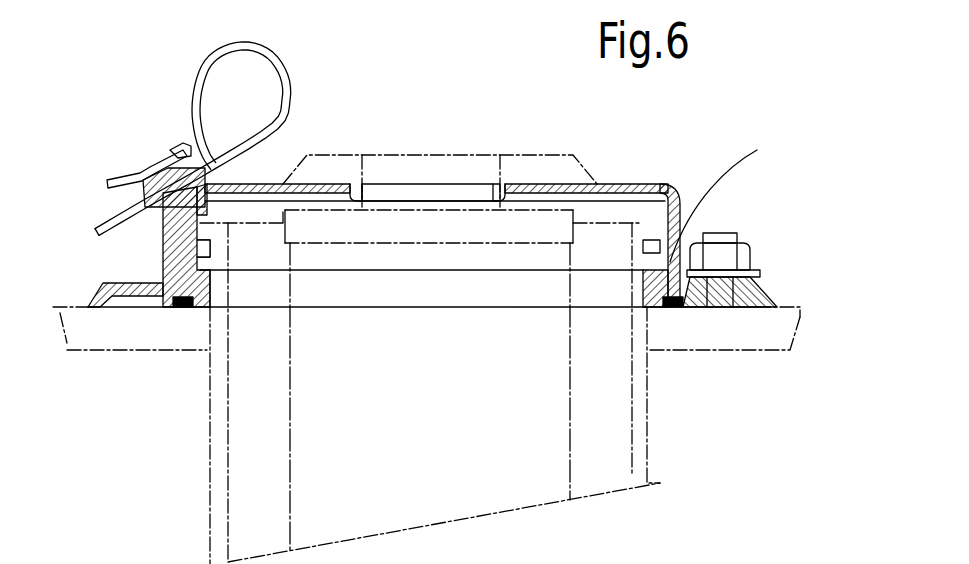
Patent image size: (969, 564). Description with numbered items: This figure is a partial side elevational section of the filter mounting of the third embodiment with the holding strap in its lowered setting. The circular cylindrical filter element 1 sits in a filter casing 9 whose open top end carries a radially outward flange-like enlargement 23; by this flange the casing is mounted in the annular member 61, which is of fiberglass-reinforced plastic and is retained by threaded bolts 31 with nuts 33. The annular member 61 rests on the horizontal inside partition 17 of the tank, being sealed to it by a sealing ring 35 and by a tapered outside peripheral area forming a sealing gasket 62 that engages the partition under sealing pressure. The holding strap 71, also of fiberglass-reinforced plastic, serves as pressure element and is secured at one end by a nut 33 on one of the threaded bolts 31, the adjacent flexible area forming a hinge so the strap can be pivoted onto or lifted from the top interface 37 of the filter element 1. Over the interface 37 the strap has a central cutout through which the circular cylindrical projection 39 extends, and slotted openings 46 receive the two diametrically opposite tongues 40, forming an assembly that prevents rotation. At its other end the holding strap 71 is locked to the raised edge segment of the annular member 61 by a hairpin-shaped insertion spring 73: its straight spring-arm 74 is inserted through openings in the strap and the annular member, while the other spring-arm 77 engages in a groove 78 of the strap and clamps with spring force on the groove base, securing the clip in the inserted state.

The filter element 1 is at (290, 493).
The filter casing 9 is at (228, 412).
The inside partition 17 is at (755, 340).
The flange-like enlargement 23 is at (660, 193).
The threaded bolt 31 is at (727, 230).
The nut 33 is at (740, 257).
The sealing ring 35 is at (670, 310).
The top interface 37 is at (467, 210).
The projection 39 is at (420, 153).
The tongue 40 is at (320, 167).
The slotted opening 46 is at (313, 188).
The annular member 61 is at (729, 187).
The sealing gasket 62 is at (103, 303).
The holding strap 71 is at (610, 183).
The insertion spring 73 is at (197, 110).
The straight spring-arm 74 is at (107, 227).
The spring-arm 77 is at (118, 180).
The groove 78 is at (173, 140).